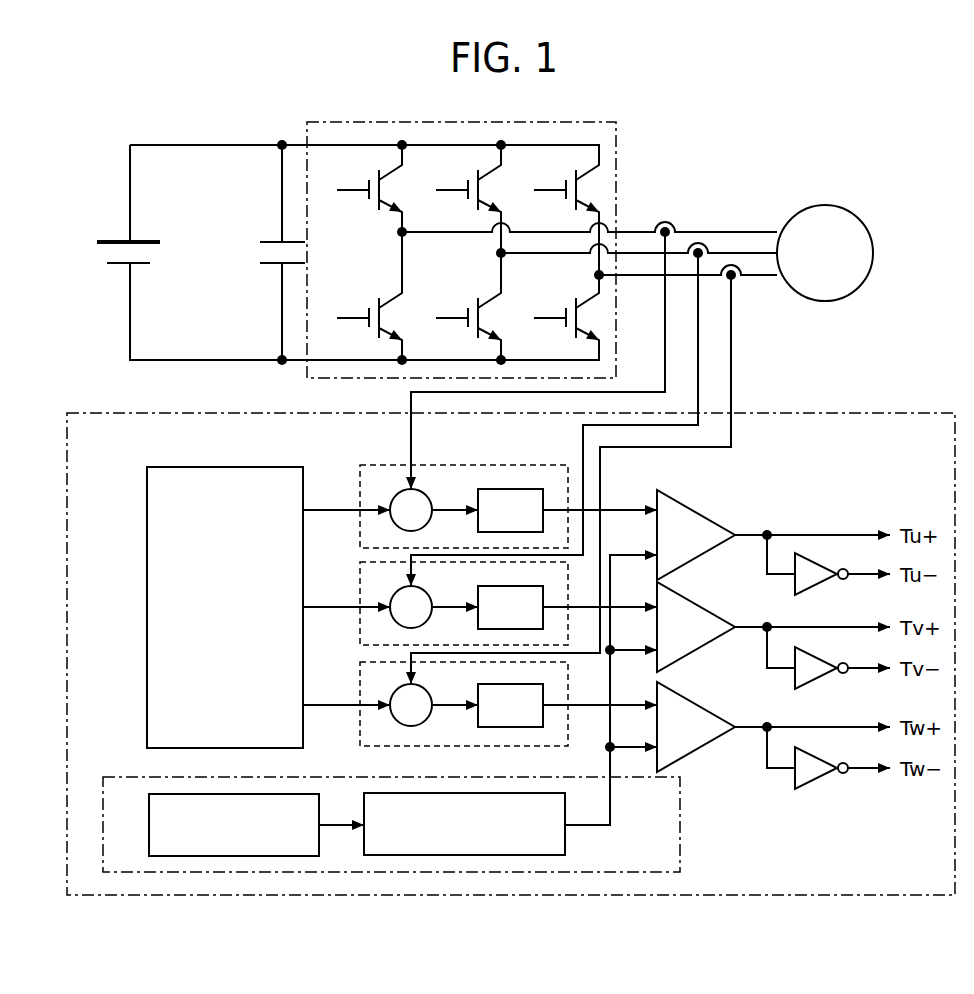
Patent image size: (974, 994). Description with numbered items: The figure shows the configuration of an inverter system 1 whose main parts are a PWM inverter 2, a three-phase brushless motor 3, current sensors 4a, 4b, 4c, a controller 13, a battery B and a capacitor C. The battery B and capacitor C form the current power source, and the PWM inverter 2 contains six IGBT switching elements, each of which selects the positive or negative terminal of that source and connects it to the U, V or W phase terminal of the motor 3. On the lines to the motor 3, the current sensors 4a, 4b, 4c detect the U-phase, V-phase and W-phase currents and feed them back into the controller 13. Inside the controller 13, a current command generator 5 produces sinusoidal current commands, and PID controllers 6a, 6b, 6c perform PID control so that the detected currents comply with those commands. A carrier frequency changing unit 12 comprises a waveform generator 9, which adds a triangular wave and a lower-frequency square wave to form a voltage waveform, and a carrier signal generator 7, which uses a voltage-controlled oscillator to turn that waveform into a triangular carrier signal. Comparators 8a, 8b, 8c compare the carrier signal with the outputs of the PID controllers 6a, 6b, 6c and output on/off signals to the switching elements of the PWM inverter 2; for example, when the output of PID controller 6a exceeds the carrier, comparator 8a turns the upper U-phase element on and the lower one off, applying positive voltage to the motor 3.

The inverter system 1 is at (908, 174).
The PWM inverter 2 is at (314, 382).
The three-phase brushless motor 3 is at (836, 209).
The current sensor 4a is at (666, 221).
The current sensor 4b is at (699, 242).
The current sensor 4c is at (733, 263).
The current command generator 5 is at (147, 500).
The PID controller 6a is at (360, 478).
The PID controller 6b is at (360, 585).
The PID controller 6c is at (360, 740).
The carrier signal generator 7 is at (566, 840).
The comparator 8a is at (700, 514).
The comparator 8b is at (700, 607).
The comparator 8c is at (700, 707).
The waveform generator 9 is at (149, 813).
The carrier frequency changing unit 12 is at (131, 777).
The controller 13 is at (829, 412).
The battery B is at (133, 237).
The capacitor C is at (272, 270).